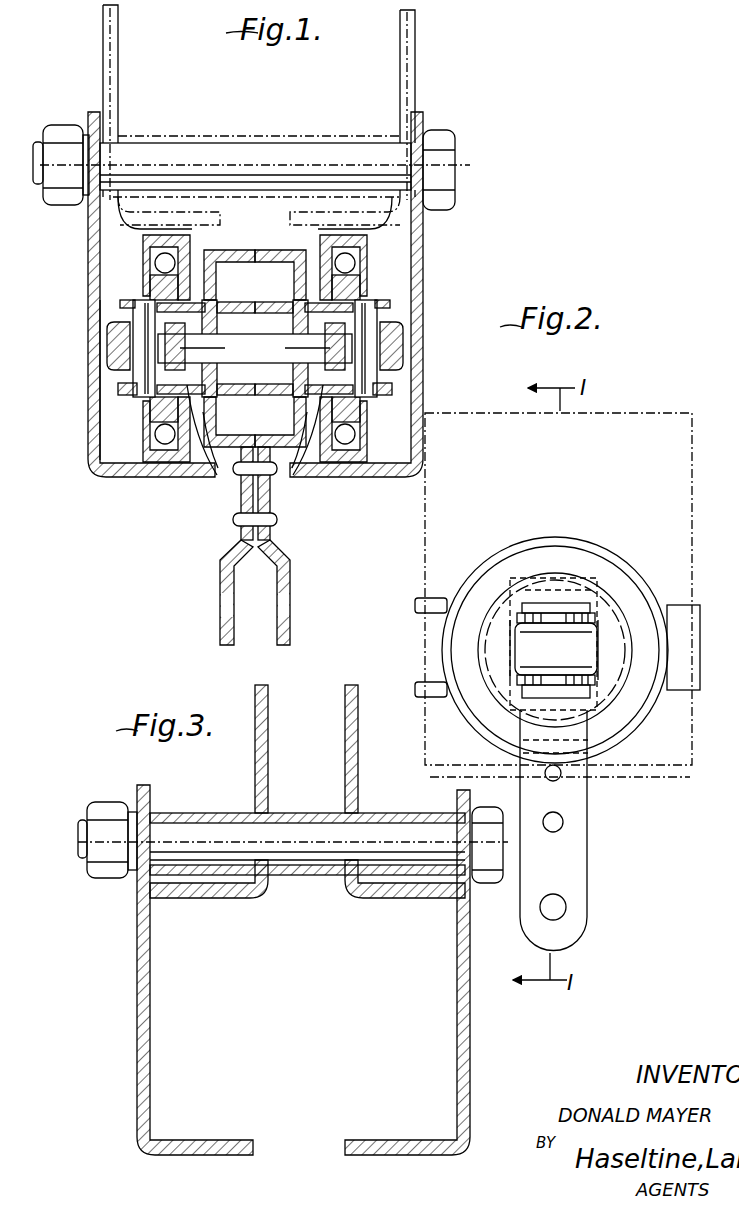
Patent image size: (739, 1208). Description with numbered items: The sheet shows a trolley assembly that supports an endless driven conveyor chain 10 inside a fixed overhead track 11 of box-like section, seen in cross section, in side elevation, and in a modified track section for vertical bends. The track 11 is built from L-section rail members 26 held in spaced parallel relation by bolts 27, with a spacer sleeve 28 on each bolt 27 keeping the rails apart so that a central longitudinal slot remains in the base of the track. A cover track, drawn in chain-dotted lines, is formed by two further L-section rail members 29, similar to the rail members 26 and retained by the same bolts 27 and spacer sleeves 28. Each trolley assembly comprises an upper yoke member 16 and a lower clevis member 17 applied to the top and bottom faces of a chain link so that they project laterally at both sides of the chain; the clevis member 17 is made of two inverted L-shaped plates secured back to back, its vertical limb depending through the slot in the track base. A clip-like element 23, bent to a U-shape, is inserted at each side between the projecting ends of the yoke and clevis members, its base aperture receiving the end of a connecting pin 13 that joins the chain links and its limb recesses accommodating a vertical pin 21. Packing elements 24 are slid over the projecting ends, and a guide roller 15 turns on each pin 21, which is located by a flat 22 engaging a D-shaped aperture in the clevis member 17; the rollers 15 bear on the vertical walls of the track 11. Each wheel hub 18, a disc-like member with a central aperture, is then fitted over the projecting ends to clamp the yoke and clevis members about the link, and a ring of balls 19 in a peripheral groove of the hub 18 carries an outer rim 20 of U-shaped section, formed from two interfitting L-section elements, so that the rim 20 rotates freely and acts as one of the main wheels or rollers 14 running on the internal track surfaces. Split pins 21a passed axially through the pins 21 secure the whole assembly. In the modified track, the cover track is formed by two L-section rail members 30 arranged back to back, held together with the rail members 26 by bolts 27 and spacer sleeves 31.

In FIG. 1, the conveyor chain 10 is at (258, 299).
In FIG. 2, the conveyor chain 10 is at (418, 613).
In FIG. 1, the track 11 is at (433, 262).
In FIG. 1, the connecting pin 13 is at (266, 359).
In FIG. 1, the wheels or rollers 14 is at (203, 246).
In FIG. 2, the wheels or rollers 14 is at (609, 543).
In FIG. 1, the guide rollers 15 is at (108, 332).
In FIG. 2, the guide rollers 15 is at (560, 662).
In FIG. 1, the yoke member 16 is at (262, 250).
In FIG. 2, the yoke member 16 is at (557, 600).
In FIG. 1, the clevis member 17 is at (214, 418).
In FIG. 2, the clevis member 17 is at (593, 712).
In FIG. 1, the wheel hub 18 is at (163, 288).
In FIG. 2, the wheel hub 18 is at (608, 615).
In FIG. 1, the balls 19 is at (160, 262).
In FIG. 1, the outer rim 20 is at (100, 226).
In FIG. 2, the outer rim 20 is at (547, 540).
In FIG. 1, the pin 21 is at (140, 352).
In FIG. 2, the pin 21 is at (548, 614).
In FIG. 1, the split pin 21a is at (142, 398).
In FIG. 1, the flat 22 is at (124, 388).
In FIG. 1, the clip-like element 23 is at (210, 300).
In FIG. 2, the clip-like element 23 is at (595, 603).
In FIG. 1, the packing element 24 is at (312, 488).
In FIG. 2, the packing element 24 is at (531, 600).
In FIG. 1, the L-section rail member 26 is at (92, 281).
In FIG. 2, the L-section rail member 26 is at (558, 595).
In FIG. 3, the L-section rail member 26 is at (150, 988).
In FIG. 1, the bolt 27 is at (322, 150).
In FIG. 3, the bolt 27 is at (303, 830).
In FIG. 1, the spacer sleeve 28 is at (284, 136).
In FIG. 1, the L-section rail member (cover track) 29 is at (115, 73).
In FIG. 3, the L-section rail member (cover track) 29 is at (306, 749).
In FIG. 3, the L-section rail member (cover track) 30 is at (258, 898).
In FIG. 3, the spacer sleeve 31 is at (213, 813).